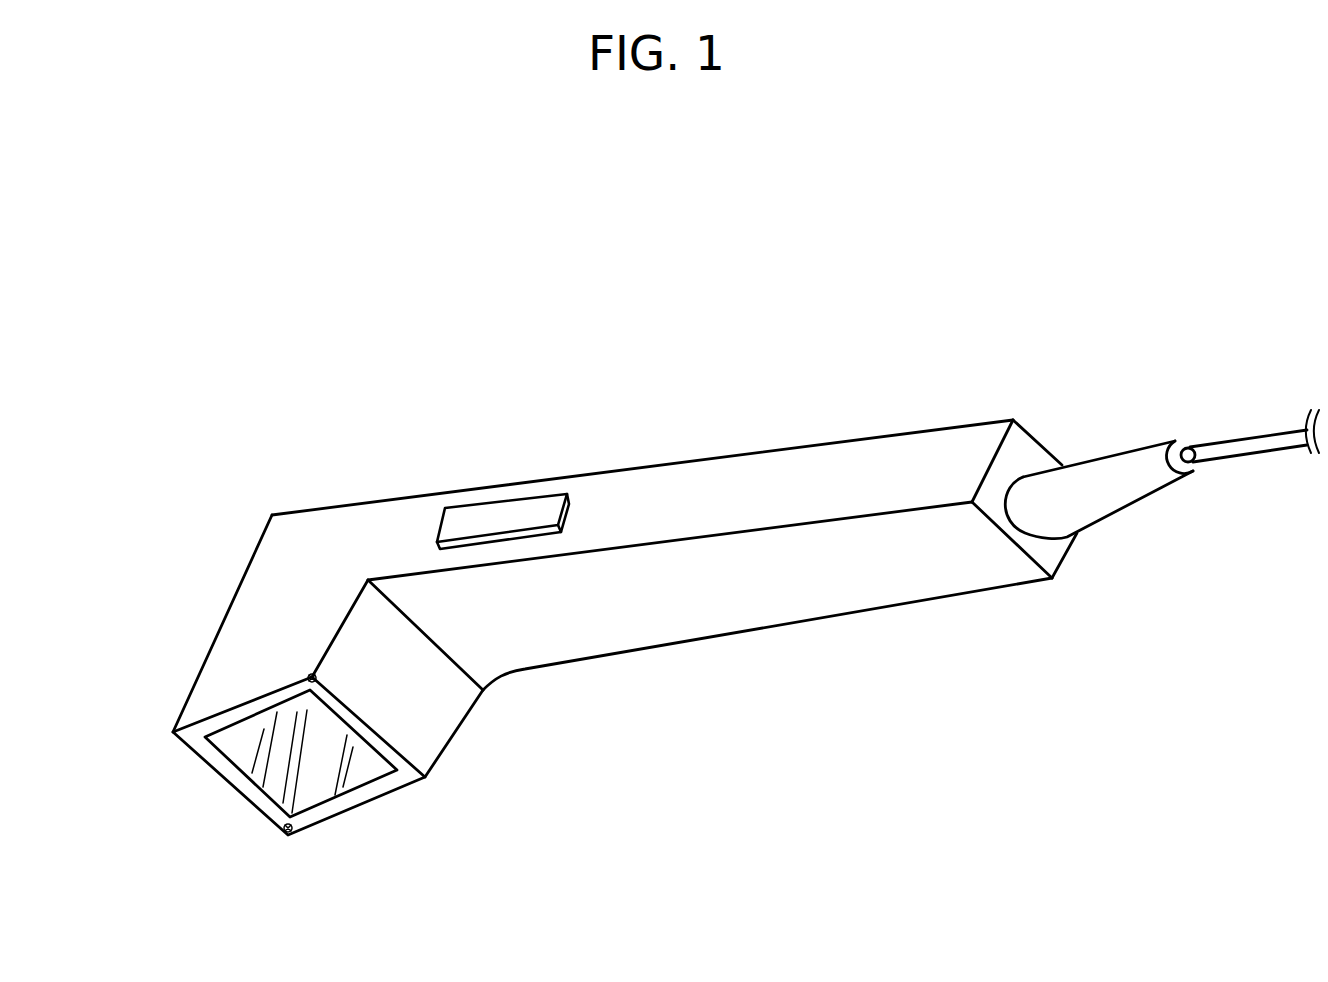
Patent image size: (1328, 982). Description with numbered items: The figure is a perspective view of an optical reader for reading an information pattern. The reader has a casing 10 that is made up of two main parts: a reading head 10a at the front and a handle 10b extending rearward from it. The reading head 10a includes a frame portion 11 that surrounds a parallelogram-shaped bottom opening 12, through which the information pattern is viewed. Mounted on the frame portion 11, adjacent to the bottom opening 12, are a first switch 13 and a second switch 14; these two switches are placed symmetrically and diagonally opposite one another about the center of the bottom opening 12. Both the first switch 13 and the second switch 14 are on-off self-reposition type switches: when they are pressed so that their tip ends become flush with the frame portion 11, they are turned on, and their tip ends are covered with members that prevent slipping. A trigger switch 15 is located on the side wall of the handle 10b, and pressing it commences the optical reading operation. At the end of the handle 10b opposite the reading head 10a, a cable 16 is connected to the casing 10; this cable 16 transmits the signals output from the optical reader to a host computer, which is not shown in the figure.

The casing 10 is at (337, 497).
The reading head 10a is at (235, 588).
The handle 10b is at (787, 623).
The frame portion 11 is at (387, 790).
The bottom opening 12 is at (248, 773).
The first switch 13 is at (293, 832).
The second switch 14 is at (305, 680).
The trigger switch 15 is at (503, 515).
The cable 16 is at (1227, 442).